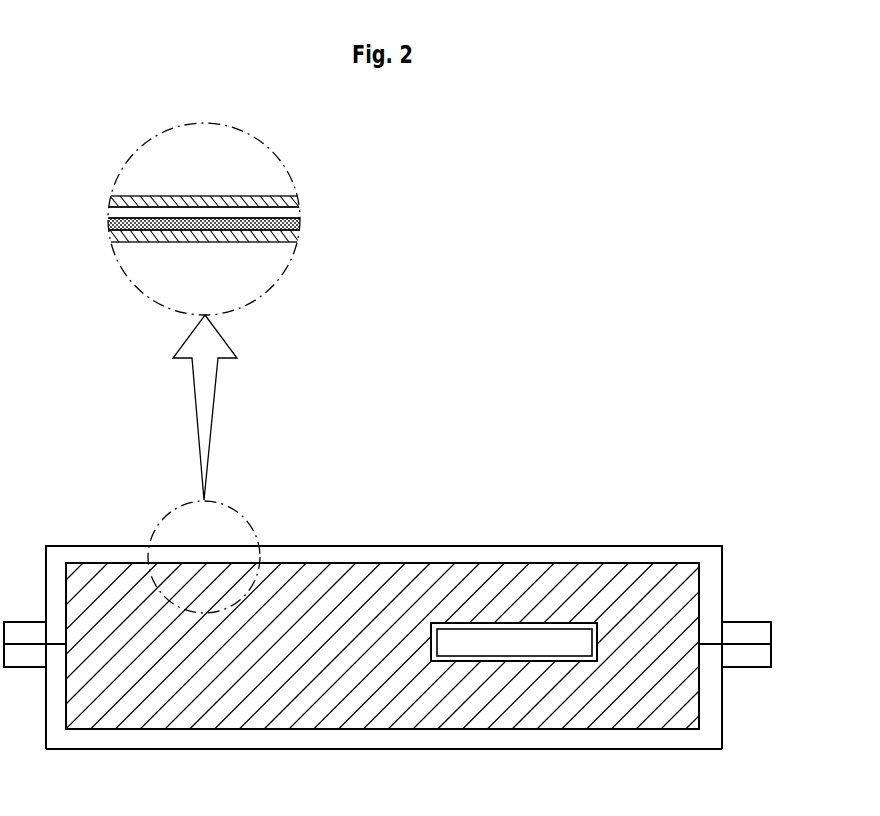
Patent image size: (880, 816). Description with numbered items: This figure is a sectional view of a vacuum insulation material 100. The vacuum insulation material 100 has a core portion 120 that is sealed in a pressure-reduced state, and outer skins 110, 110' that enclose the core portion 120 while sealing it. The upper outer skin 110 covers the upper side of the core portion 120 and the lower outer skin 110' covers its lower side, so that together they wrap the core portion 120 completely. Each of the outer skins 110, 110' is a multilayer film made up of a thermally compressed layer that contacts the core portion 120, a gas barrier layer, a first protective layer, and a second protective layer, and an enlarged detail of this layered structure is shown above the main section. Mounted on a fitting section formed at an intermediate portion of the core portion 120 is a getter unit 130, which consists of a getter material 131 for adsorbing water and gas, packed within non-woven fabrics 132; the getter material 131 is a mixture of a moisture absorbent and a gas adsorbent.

The vacuum insulation material 100 is at (618, 443).
The upper outer skin 110 is at (408, 436).
The lower outer skin 110' is at (430, 736).
The core portion 120 is at (678, 687).
The getter unit 130 is at (514, 548).
The getter material 131 is at (455, 635).
The non-woven fabrics 132 is at (515, 622).